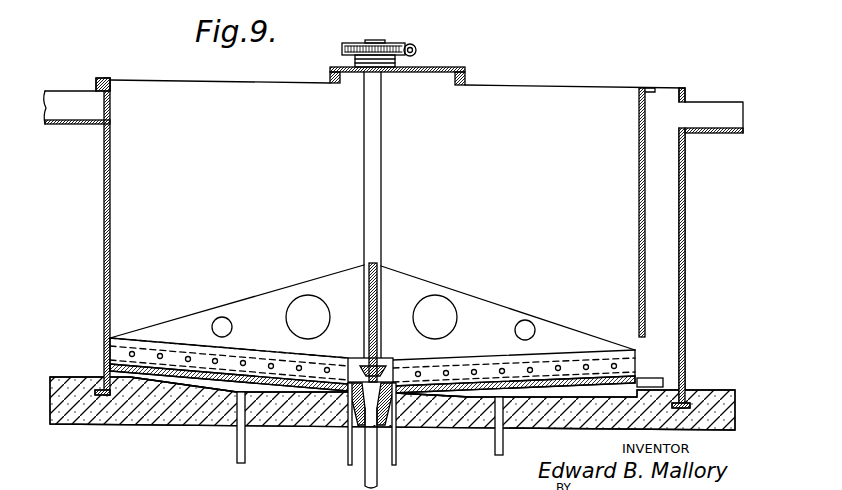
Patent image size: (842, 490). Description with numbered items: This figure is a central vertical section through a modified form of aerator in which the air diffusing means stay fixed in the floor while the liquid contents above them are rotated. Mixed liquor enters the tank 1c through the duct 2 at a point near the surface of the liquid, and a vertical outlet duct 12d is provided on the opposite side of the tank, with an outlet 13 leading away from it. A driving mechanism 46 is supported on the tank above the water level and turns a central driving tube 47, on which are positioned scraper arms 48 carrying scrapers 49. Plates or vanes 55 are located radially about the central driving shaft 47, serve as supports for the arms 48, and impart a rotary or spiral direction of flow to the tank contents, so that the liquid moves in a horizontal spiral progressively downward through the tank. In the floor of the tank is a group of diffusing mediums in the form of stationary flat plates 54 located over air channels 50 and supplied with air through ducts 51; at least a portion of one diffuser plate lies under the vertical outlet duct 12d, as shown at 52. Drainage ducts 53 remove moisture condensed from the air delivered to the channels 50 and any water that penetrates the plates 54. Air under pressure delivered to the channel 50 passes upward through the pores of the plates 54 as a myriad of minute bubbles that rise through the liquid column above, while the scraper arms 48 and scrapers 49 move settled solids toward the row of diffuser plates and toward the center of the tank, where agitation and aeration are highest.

The tank 1c is at (104, 256).
The duct 2 is at (72, 124).
The vertical outlet duct 12d is at (660, 226).
The outlet pipe 13 is at (720, 134).
The driving mechanism 46 is at (411, 44).
The central driving tube 47 is at (383, 166).
The scraper arms 48 is at (257, 360).
The scrapers 49 is at (110, 362).
The air channels 50 is at (220, 383).
The ducts 51 is at (246, 446).
The diffuser plate portion under outlet duct 52 is at (660, 378).
The drainage ducts 53 is at (348, 456).
The stationary flat plates 54 is at (165, 388).
The plates or vanes 55 is at (438, 294).